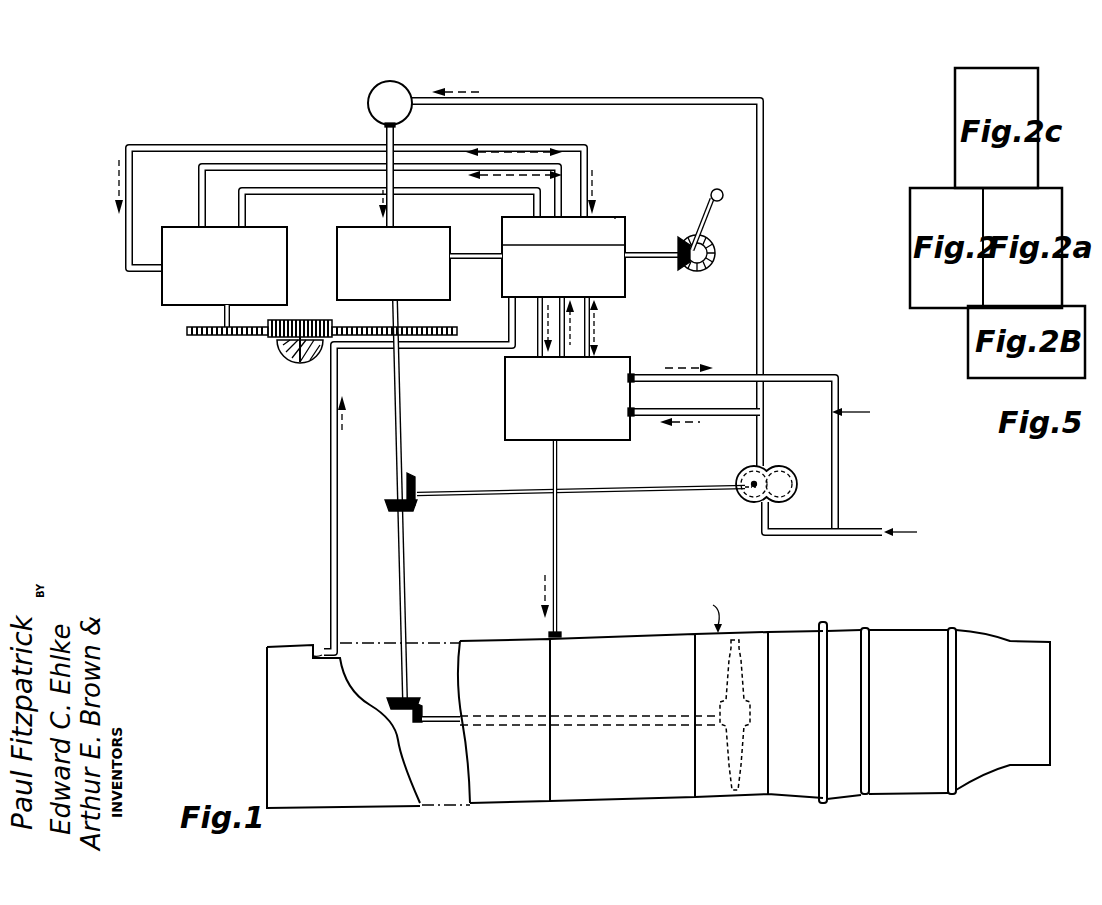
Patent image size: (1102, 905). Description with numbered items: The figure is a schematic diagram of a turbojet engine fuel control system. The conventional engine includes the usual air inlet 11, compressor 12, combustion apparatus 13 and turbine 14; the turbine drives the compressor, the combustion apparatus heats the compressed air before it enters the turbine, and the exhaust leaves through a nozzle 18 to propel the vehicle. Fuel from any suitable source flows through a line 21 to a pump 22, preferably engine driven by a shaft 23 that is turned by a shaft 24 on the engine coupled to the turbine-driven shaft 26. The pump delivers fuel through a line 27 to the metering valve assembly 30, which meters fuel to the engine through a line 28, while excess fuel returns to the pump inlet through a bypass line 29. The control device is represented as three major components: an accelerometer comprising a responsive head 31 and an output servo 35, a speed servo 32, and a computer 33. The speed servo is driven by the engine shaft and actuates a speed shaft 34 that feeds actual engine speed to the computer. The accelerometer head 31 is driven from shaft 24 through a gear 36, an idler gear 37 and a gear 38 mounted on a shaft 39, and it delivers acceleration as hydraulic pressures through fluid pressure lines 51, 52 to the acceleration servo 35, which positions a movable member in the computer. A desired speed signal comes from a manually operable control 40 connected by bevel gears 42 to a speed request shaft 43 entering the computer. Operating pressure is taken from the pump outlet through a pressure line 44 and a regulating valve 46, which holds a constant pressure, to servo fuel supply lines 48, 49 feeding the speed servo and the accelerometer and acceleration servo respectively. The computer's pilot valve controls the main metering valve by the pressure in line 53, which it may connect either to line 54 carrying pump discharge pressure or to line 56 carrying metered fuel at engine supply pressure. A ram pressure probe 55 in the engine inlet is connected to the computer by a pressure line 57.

The air inlet 11 is at (280, 724).
The compressor 12 is at (485, 650).
The combustion apparatus 13 is at (622, 638).
The turbine 14 is at (745, 636).
The nozzle 18 is at (1050, 682).
The fuel supply line 21 is at (858, 530).
The pump 22 is at (762, 505).
The pump drive shaft 23 is at (582, 493).
The engine shaft 24 is at (406, 616).
The turbine-driven shaft 26 is at (460, 712).
The pump delivery line 27 is at (648, 416).
The metered fuel line 28 is at (553, 562).
The bypass line 29 is at (785, 374).
The metering valve assembly 30 is at (505, 394).
The accelerometer head 31 is at (162, 292).
The speed servo 32 is at (338, 234).
The computer 33 is at (627, 280).
The speed shaft 34 is at (494, 262).
The acceleration servo 35 is at (613, 217).
The gear 36 is at (430, 337).
The idler gear 37 is at (298, 320).
The gear 38 is at (210, 338).
The accelerometer shaft 39 is at (220, 323).
The manually operable control 40 is at (716, 188).
The bevel gears 42 is at (690, 268).
The speed request shaft 43 is at (650, 251).
The pressure line 44 is at (698, 96).
The regulating valve 46 is at (405, 85).
The servo fuel supply line 48 is at (396, 209).
The servo fuel supply line 49 is at (226, 147).
The fluid pressure line 51 is at (470, 162).
The fluid pressure line 52 is at (500, 197).
The metering valve control line 53 is at (590, 316).
The pump discharge pressure line 54 is at (568, 340).
The ram pressure probe 55 is at (324, 640).
The metered fuel pressure line 56 is at (510, 322).
The ram pressure line 57 is at (330, 453).